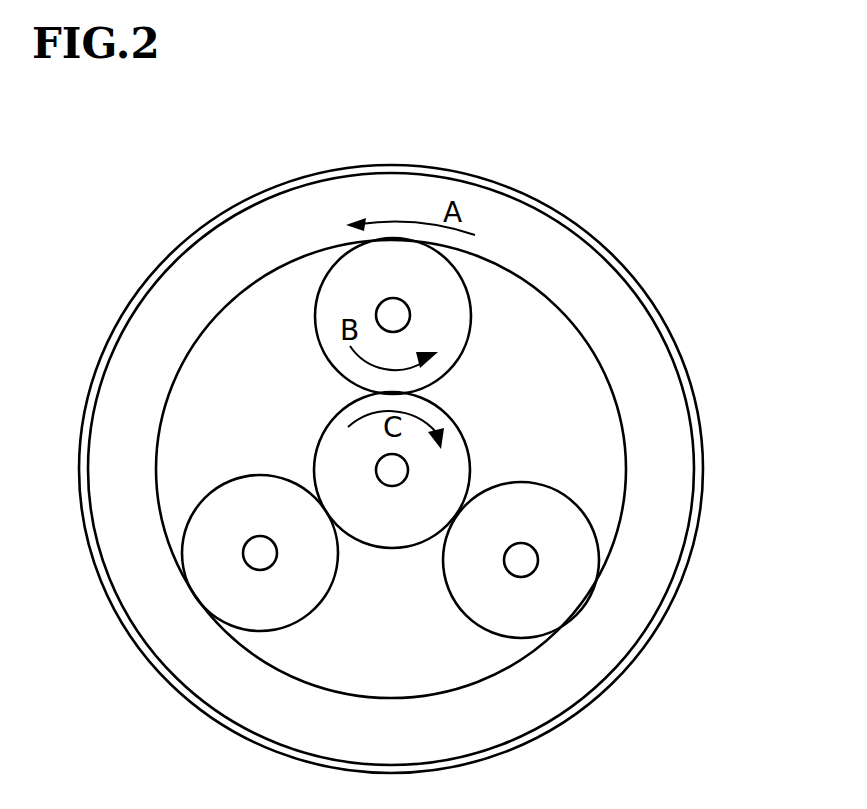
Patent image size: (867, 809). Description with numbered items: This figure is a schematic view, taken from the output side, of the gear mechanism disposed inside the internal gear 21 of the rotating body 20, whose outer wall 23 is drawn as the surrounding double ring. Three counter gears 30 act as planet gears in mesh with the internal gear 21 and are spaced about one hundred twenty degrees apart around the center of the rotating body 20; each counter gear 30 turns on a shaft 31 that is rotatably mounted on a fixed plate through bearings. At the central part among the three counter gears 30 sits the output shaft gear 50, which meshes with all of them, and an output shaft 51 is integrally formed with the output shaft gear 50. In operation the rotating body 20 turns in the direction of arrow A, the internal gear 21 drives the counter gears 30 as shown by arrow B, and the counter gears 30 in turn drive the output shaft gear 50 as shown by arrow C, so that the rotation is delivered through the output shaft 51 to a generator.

The rotating body 20 is at (582, 263).
The internal gear 21 is at (637, 442).
The outer wall of housing 23 is at (665, 320).
The counter gear 30 is at (402, 265).
The shaft 31 is at (377, 306).
The output shaft gear 50 is at (324, 426).
The output shaft 51 is at (376, 469).